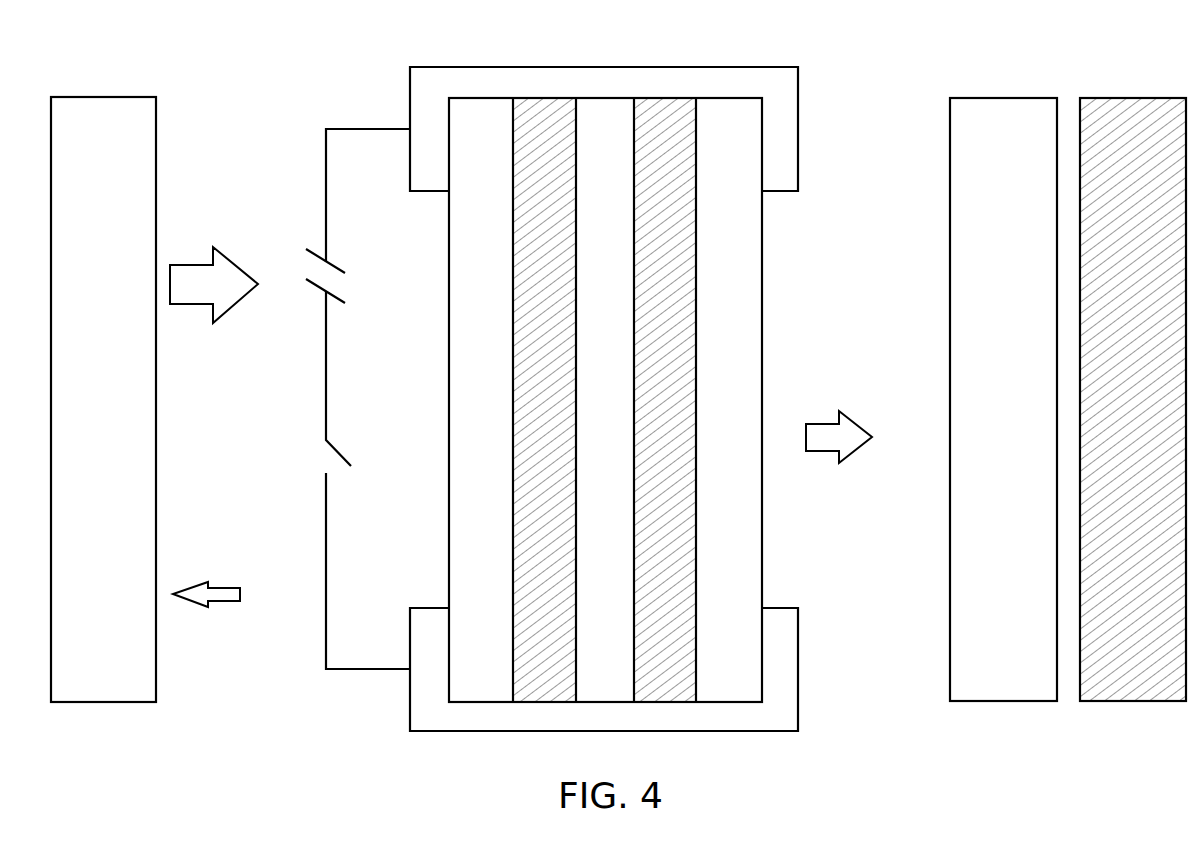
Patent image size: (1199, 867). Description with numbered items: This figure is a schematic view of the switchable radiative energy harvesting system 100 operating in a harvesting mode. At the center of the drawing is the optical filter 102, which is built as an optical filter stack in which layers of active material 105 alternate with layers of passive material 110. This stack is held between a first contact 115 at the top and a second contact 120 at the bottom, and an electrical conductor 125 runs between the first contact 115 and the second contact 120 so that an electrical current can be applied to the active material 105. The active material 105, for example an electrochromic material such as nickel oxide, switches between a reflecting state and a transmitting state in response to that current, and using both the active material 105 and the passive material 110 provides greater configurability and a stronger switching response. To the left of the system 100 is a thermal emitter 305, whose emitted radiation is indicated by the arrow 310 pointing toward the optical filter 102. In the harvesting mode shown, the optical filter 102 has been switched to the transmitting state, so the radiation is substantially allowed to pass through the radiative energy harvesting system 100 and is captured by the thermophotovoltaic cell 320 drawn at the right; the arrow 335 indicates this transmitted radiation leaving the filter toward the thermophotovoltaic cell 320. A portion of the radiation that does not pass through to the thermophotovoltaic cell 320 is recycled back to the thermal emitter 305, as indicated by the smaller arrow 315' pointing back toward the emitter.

The radiative energy harvesting system 100 is at (376, 95).
The optical filter 102 is at (800, 276).
The active material 105 is at (502, 423).
The passive material 110 is at (538, 100).
The first contact 115 is at (798, 130).
The second contact 120 is at (798, 660).
The electrical conductor 125 is at (326, 215).
The thermal emitter 305 is at (156, 650).
The arrow 310 is at (180, 265).
The arrow 315' is at (219, 571).
The thermophotovoltaic cell 320 is at (1180, 75).
The heat output arrow 335 is at (818, 424).